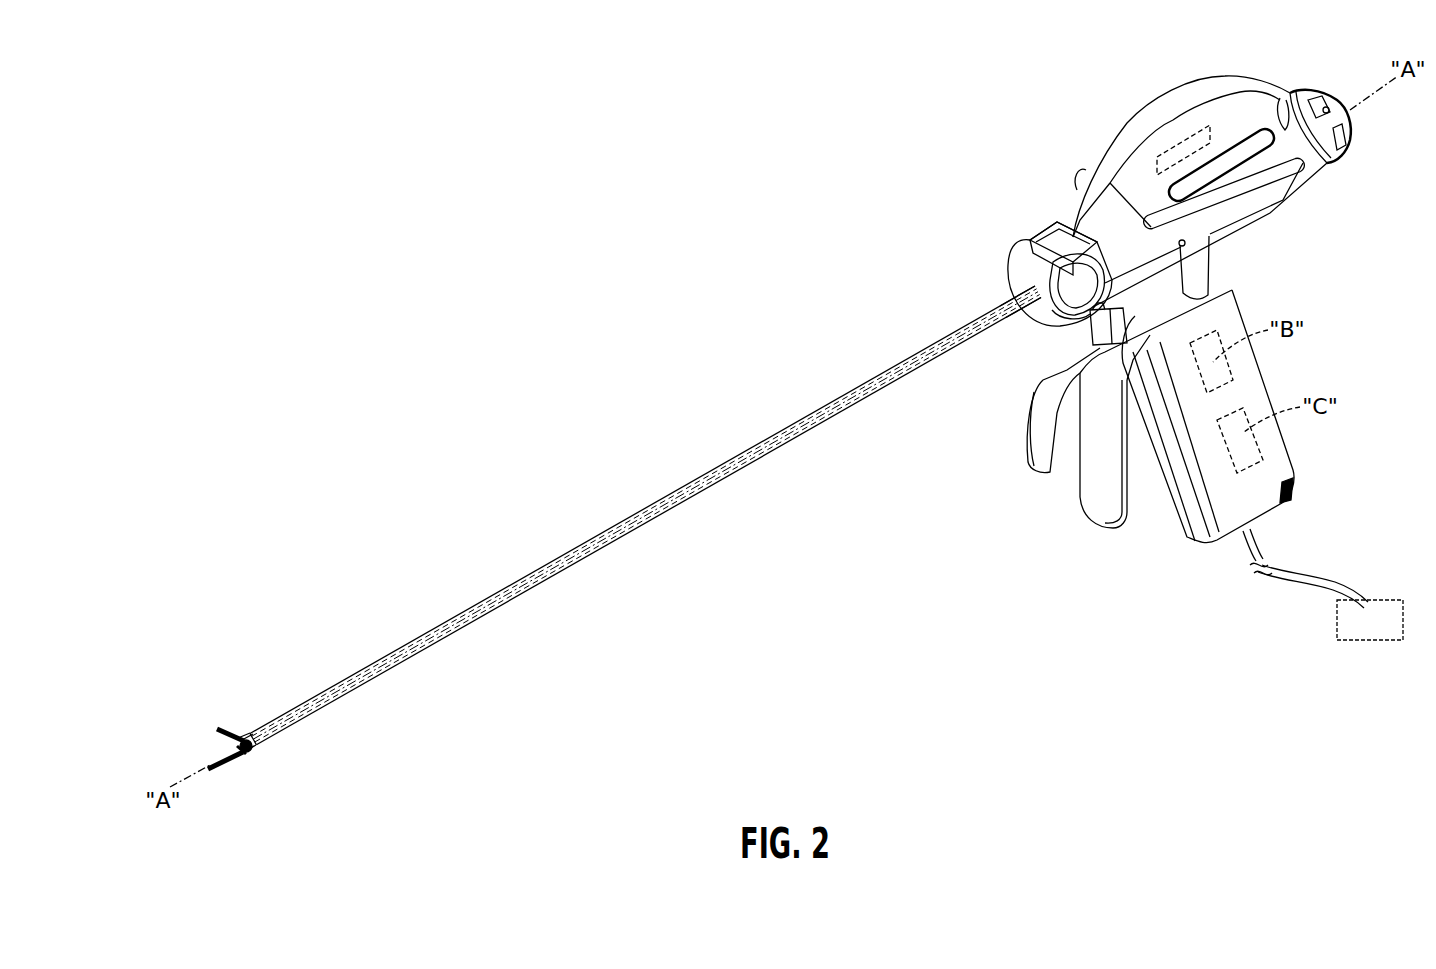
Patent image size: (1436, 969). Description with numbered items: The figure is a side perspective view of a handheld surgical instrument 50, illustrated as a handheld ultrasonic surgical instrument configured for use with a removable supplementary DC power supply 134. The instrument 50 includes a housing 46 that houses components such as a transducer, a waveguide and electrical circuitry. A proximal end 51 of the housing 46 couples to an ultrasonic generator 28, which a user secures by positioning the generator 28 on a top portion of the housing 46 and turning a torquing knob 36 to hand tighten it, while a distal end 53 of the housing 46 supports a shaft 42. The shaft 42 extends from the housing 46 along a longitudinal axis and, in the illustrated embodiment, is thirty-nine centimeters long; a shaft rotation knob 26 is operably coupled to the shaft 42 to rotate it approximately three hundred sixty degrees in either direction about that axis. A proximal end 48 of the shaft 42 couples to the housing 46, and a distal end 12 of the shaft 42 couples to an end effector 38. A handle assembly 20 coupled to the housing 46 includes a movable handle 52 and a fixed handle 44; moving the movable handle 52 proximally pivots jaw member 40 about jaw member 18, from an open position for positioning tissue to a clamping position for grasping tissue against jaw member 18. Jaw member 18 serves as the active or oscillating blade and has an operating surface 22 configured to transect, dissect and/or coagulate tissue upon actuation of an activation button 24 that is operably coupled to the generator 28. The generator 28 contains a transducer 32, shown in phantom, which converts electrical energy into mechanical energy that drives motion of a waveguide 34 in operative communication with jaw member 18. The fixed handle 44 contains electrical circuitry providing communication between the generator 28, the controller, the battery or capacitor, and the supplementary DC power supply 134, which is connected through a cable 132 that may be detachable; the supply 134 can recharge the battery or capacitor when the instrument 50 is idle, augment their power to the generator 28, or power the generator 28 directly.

The distal end of the shaft 12 is at (250, 735).
The jaw member 18 is at (235, 755).
The handle assembly 20 is at (1006, 463).
The operating surface 22 is at (223, 759).
The activation button 24 is at (1087, 327).
The shaft rotation knob 26 is at (1031, 236).
The ultrasonic generator 28 is at (1196, 84).
The transducer 32 is at (1184, 135).
The waveguide 34 is at (446, 622).
The torquing knob 36 is at (1310, 90).
The end effector 38 is at (238, 726).
The jaw member 40 is at (218, 728).
The shaft 42 is at (673, 492).
The fixed handle 44 is at (1234, 294).
The housing 46 is at (1079, 177).
The proximal end of the shaft 48 is at (1009, 297).
The handheld surgical instrument 50 is at (797, 301).
The proximal end of the housing 51 is at (1283, 95).
The movable handle 52 is at (1102, 527).
The distal end of the housing 53 is at (1050, 224).
The cable 132 is at (1268, 578).
The supplementary DC power supply 134 is at (1352, 635).